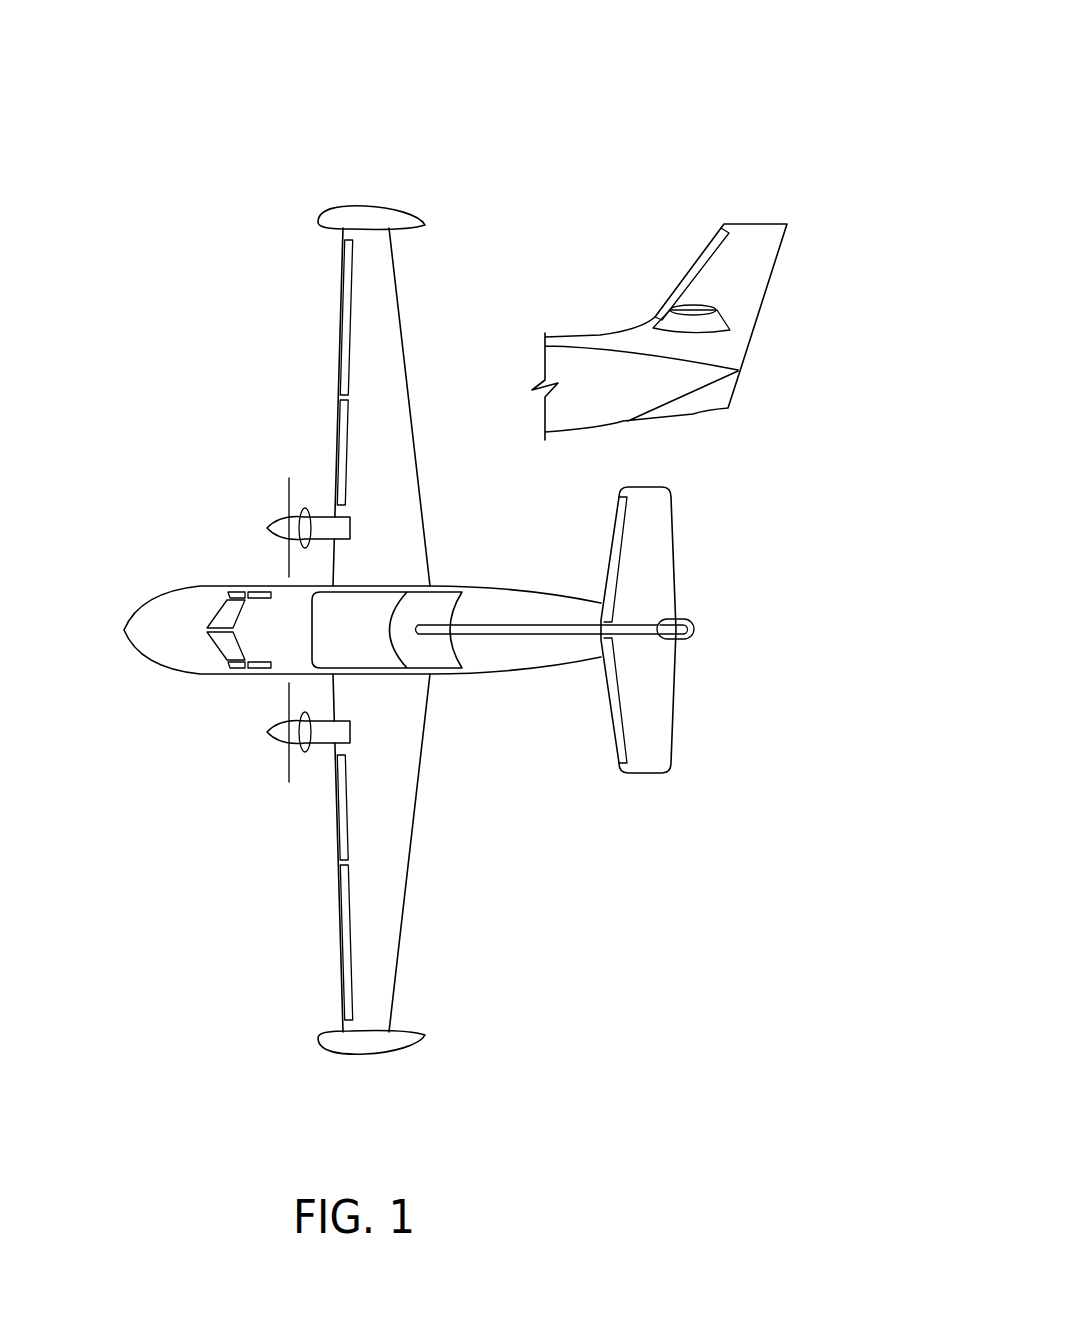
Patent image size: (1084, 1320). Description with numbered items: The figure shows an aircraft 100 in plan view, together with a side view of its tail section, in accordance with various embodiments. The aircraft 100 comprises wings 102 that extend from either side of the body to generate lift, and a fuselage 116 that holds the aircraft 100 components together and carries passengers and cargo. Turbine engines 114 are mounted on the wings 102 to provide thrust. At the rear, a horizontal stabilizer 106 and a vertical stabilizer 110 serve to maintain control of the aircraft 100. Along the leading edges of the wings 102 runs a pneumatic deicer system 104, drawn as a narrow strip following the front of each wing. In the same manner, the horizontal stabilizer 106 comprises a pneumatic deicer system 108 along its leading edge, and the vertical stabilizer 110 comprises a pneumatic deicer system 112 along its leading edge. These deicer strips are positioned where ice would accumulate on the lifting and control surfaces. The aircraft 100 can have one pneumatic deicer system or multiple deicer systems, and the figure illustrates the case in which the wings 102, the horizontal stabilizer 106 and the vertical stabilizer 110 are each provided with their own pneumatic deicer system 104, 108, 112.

The aircraft 100 is at (446, 528).
The wings 102 is at (400, 314).
The pneumatic deicer system 104 is at (340, 327).
The horizontal stabilizer 106 is at (635, 630).
The pneumatic deicer system 108 is at (612, 552).
The vertical stabilizer 110 is at (704, 332).
The pneumatic deicer system 112 is at (673, 293).
The turbine engines 114 is at (268, 535).
The fuselage 116 is at (497, 675).